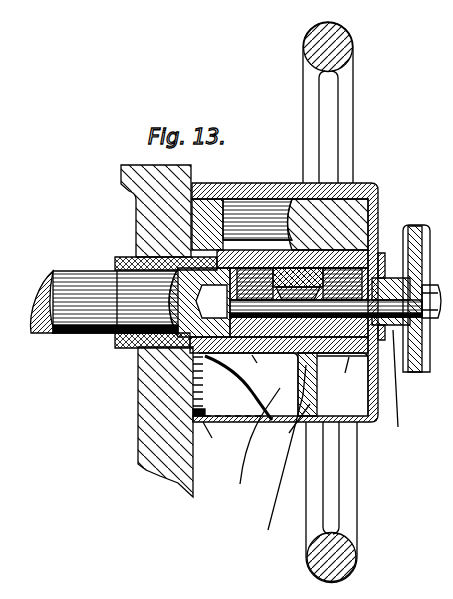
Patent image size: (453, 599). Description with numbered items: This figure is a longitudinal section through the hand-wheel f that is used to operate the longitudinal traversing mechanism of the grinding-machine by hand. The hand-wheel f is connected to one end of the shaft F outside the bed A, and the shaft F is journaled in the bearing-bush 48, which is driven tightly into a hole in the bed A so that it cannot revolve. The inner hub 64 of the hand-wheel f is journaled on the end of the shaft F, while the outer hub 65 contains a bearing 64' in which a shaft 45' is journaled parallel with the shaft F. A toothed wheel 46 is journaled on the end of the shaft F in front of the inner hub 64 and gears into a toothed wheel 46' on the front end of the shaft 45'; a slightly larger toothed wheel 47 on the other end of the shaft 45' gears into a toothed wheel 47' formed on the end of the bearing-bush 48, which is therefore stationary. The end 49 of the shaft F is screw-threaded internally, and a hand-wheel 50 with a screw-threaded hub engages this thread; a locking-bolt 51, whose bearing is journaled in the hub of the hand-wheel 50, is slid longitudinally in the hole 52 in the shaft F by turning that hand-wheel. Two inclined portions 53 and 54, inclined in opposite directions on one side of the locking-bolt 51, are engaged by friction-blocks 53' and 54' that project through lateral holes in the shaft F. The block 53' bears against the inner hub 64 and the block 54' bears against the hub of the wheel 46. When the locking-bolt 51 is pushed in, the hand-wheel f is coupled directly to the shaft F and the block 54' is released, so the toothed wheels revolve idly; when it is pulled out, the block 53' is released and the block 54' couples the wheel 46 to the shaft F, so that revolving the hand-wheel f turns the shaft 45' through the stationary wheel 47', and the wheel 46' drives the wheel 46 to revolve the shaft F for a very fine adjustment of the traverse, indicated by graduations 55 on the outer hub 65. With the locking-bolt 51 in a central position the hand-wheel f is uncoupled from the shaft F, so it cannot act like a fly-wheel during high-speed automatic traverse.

The hand-wheel f is at (358, 556).
The toothed wheel 46' is at (311, 291).
The shaft 45' is at (309, 184).
The bearing 64' is at (257, 199).
The toothed wheel 47 is at (280, 217).
The friction-block 53' is at (120, 211).
The bearing-bush 48 is at (126, 350).
The shaft F is at (52, 337).
The bed A is at (141, 438).
The inclined portion 53 is at (138, 348).
The hole 52 is at (211, 301).
The friction-block 54' is at (335, 264).
The hand-wheel 50 is at (427, 285).
The inner hub 64 is at (262, 366).
The toothed wheel 47' is at (238, 388).
The toothed wheel 46 is at (341, 372).
The graduations 55 is at (212, 438).
The outer hub 65 is at (291, 427).
The locking-bolt 51 is at (257, 443).
The inclined portion 54 is at (285, 457).
The end of the shaft 49 is at (403, 386).